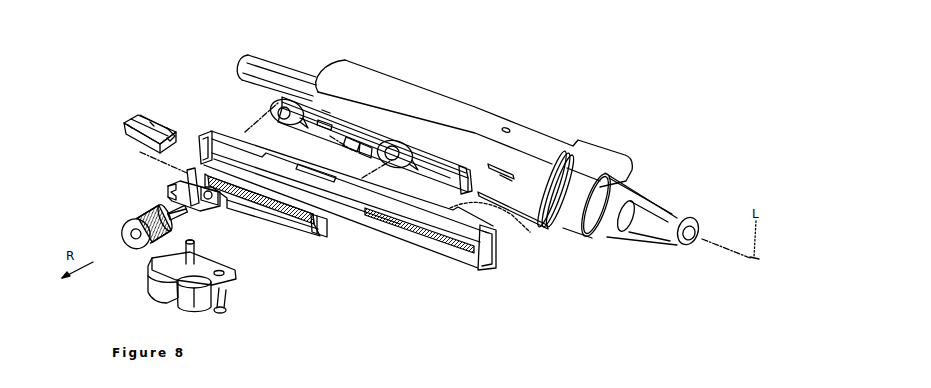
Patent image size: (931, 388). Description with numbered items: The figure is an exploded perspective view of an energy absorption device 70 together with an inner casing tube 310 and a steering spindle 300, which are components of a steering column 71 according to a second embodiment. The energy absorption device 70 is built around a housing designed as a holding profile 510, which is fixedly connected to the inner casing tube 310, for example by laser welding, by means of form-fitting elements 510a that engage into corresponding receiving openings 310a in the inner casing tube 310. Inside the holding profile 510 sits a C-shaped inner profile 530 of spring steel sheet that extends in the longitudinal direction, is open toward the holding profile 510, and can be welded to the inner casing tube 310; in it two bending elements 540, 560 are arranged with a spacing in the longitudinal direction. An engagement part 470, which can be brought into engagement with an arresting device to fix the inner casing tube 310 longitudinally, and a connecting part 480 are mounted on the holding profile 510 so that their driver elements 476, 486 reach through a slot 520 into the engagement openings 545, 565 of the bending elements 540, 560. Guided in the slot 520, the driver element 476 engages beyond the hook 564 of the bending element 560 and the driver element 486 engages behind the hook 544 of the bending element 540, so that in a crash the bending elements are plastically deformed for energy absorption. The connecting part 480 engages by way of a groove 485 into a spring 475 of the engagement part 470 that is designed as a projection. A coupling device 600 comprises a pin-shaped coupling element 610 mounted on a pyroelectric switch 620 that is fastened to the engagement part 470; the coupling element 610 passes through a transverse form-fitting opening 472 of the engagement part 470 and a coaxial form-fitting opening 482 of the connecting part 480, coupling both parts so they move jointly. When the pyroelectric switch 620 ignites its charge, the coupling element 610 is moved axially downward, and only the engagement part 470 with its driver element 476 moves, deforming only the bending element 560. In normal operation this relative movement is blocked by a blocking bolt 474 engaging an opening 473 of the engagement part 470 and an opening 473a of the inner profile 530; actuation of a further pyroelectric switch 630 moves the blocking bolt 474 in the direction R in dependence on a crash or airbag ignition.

The energy absorption device 70 is at (305, 296).
The steering column 71 is at (545, 77).
The steering spindle 300 is at (613, 197).
The inner casing tube 310 is at (548, 152).
The receiving openings 310a is at (508, 178).
The engagement part 470 is at (262, 220).
The form-fitting opening 472 is at (170, 192).
The opening 473 is at (217, 213).
The opening 473a is at (325, 110).
The blocking bolt 474 is at (157, 200).
The spring 475 is at (182, 180).
The driver element 476 is at (323, 232).
The connecting part 480 is at (135, 133).
The form-fitting opening 482 is at (135, 116).
The groove 485 is at (155, 122).
The driver element 486 is at (167, 127).
The holding profile 510 is at (492, 258).
The form-fitting elements 510a is at (512, 212).
The slot 520 is at (430, 245).
The inner profile 530 is at (460, 160).
The bending element 540 is at (340, 137).
The hook 544 is at (297, 100).
The engagement opening 545 is at (277, 78).
The bending element 560 is at (434, 176).
The hook 564 is at (408, 145).
The engagement opening 565 is at (387, 145).
The coupling device 600 is at (157, 298).
The coupling element 610 is at (186, 248).
The pyroelectric switch 620 is at (194, 308).
The pyroelectric switch 630 is at (122, 232).